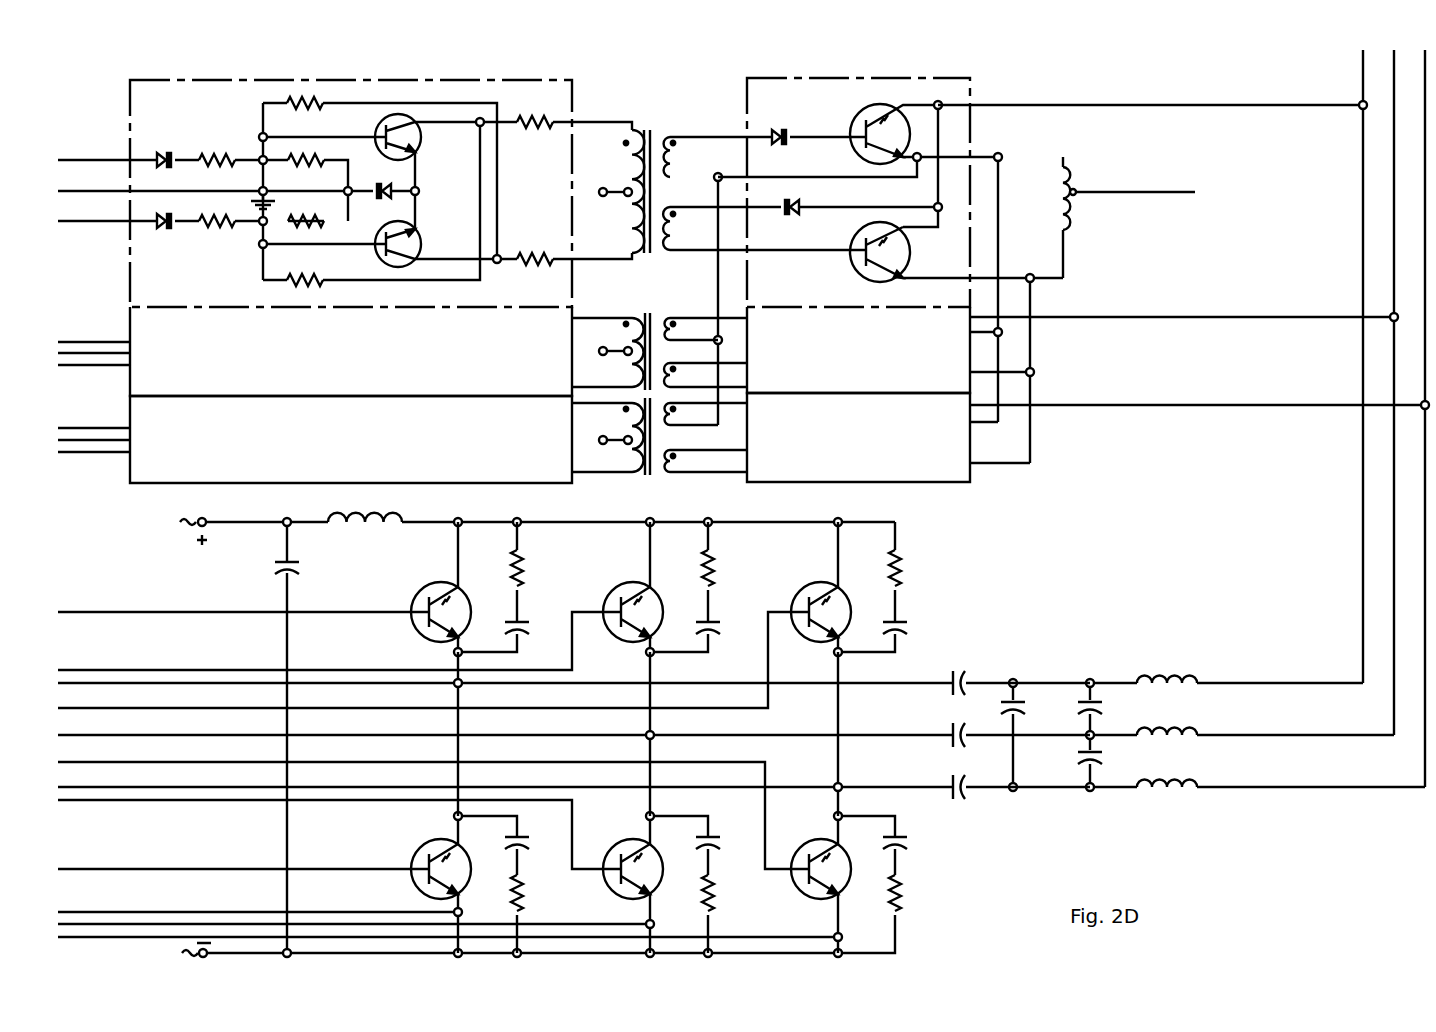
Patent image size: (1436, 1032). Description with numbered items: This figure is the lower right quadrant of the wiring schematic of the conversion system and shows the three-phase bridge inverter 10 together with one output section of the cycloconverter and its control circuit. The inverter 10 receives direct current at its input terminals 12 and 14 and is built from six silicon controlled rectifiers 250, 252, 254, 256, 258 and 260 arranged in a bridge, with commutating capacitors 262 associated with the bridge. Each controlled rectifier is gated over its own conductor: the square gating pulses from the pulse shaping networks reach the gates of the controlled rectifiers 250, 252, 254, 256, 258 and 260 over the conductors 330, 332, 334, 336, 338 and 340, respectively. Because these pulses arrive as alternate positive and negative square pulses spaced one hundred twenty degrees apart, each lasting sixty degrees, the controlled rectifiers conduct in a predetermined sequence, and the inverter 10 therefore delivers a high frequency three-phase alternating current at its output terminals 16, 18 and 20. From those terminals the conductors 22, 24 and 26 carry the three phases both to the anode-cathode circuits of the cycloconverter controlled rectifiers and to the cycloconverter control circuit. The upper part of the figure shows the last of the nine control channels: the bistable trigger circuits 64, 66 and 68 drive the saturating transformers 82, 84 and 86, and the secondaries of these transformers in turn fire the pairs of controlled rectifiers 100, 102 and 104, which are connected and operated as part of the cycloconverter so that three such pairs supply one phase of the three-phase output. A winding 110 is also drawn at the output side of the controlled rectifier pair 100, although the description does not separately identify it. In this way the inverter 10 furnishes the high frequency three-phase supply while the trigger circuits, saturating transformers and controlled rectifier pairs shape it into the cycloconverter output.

The inverter 10 is at (563, 731).
The direct current input terminal 12 is at (525, 732).
The direct current input terminal 14 is at (526, 940).
The alternating current output terminal 16 is at (461, 686).
The alternating current output terminal 18 is at (653, 738).
The alternating current output terminal 20 is at (841, 790).
The conductor 22 is at (1360, 63).
The conductor 24 is at (1392, 63).
The conductor 26 is at (1424, 63).
The bistable trigger circuit 64 is at (599, 88).
The bistable trigger circuit 66 is at (361, 360).
The bistable trigger circuit 68 is at (361, 447).
The saturating transformer 82 is at (662, 122).
The saturating transformer 84 is at (662, 306).
The saturating transformer 86 is at (662, 501).
The pair of controlled rectifiers 100 is at (995, 126).
The pair of controlled rectifiers 102 is at (879, 360).
The pair of controlled rectifiers 104 is at (879, 446).
The inductor winding 110 is at (1133, 193).
The controlled rectifier 250 is at (438, 580).
The controlled rectifier 252 is at (629, 580).
The controlled rectifier 254 is at (817, 580).
The controlled rectifier 256 is at (442, 835).
The controlled rectifier 258 is at (629, 835).
The controlled rectifier 260 is at (815, 835).
The commutating capacitor 262 is at (951, 707).
The conductor 330 is at (86, 611).
The conductor 332 is at (86, 669).
The conductor 334 is at (86, 707).
The conductor 336 is at (86, 868).
The conductor 338 is at (84, 802).
The conductor 340 is at (86, 761).